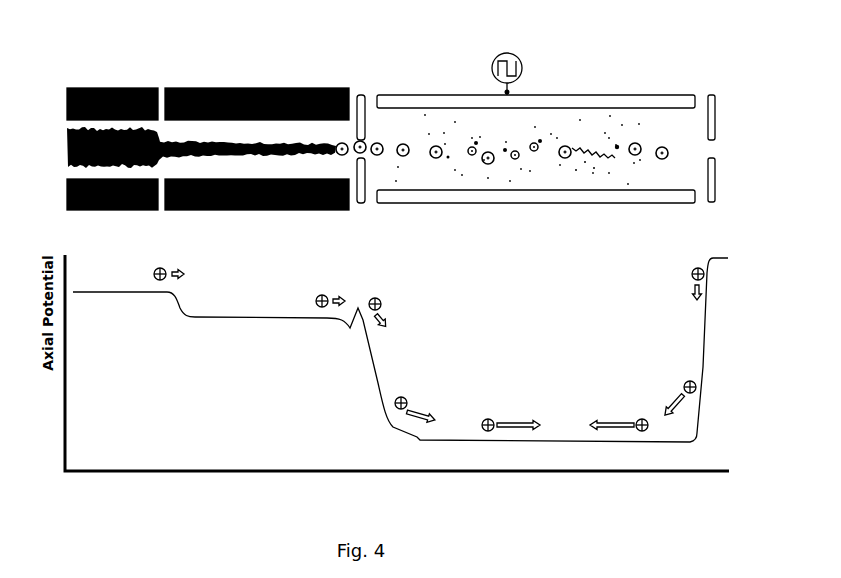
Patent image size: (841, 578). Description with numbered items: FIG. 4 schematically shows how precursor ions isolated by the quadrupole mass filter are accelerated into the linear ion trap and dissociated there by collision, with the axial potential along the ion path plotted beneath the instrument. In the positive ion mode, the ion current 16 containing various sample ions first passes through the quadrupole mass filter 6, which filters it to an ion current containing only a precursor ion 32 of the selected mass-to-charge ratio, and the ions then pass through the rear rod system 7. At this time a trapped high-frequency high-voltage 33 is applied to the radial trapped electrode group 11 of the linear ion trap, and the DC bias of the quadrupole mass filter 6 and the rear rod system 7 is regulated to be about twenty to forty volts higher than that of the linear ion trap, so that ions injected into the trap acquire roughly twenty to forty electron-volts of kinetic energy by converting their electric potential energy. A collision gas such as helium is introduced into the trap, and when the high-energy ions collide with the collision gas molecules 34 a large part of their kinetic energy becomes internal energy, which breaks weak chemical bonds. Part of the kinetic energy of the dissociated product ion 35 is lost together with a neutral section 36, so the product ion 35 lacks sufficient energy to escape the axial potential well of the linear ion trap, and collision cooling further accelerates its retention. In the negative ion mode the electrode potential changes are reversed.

The quadrupole mass filter 6 is at (132, 88).
The rear rod system 7 is at (255, 88).
The ion current 16 is at (122, 168).
The radial trapped electrode group 11 is at (683, 95).
The precursor ion 32 is at (563, 146).
The trapped high-frequency high-voltage 33 is at (516, 57).
The collision gas molecules 34 is at (587, 160).
The product ion 35 is at (618, 156).
The neutral section 36 is at (619, 147).